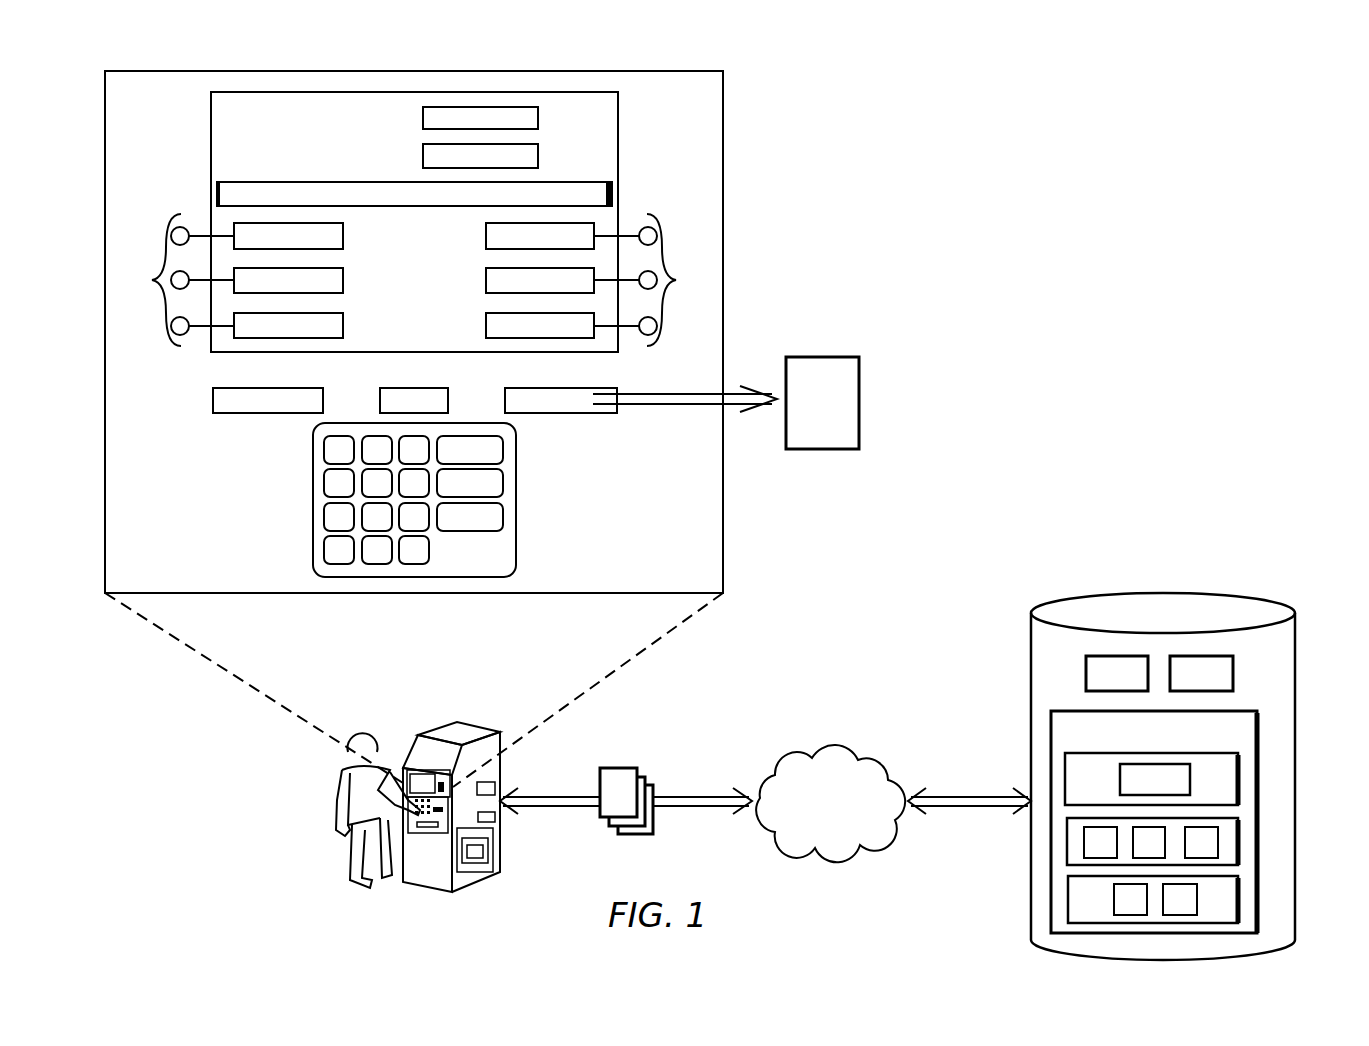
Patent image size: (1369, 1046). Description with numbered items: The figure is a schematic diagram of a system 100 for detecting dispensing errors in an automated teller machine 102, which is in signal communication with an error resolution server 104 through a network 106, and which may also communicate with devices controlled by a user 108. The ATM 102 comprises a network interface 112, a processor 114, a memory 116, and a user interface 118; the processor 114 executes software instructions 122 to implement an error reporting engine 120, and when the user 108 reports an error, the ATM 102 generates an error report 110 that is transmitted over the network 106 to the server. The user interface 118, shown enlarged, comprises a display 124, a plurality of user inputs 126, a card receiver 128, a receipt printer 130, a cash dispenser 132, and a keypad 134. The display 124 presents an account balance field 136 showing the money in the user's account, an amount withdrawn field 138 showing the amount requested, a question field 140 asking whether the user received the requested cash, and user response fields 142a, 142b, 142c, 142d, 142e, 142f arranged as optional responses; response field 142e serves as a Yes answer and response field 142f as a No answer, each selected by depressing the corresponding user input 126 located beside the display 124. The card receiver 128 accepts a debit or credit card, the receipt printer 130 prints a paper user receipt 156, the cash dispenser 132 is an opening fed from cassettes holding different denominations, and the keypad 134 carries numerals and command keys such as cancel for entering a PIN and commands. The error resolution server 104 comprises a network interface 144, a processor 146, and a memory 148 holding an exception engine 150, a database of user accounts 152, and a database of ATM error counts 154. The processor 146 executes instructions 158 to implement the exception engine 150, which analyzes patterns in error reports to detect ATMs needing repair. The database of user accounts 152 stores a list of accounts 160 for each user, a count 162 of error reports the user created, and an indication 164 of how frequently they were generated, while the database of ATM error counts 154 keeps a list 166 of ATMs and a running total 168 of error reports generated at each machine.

The system 100 is at (1256, 71).
The automated teller machine 102 is at (473, 728).
The error resolution server 104 is at (1163, 776).
The network 106 is at (830, 803).
The user 108 is at (313, 762).
The error report 110 is at (643, 772).
The network interface 112 is at (500, 777).
The processor 114 is at (498, 825).
The memory 116 is at (497, 840).
The user interface 118 is at (702, 71).
The error reporting engine 120 is at (488, 862).
The software instructions 122 is at (480, 860).
The display 124 is at (211, 133).
The user inputs 126 is at (418, 280).
The card receiver 128 is at (288, 387).
The receipt printer 130 is at (572, 387).
The cash dispenser 132 is at (427, 387).
The keypad 134 is at (516, 455).
The account balance field 136 is at (539, 115).
The amount withdrawn field 138 is at (539, 153).
The question field 140 is at (613, 192).
The user response field 142a is at (343, 222).
The user response field 142b is at (486, 248).
The user response field 142c is at (343, 267).
The user response field 142d is at (486, 292).
The user response field 142e is at (343, 312).
The user response field 142f is at (486, 337).
The network interface 144 is at (1117, 673).
The processor 146 is at (1201, 673).
The memory 148 is at (1154, 822).
The exception engine 150 is at (1240, 768).
The database of user accounts 152 is at (1240, 835).
The database of ATM error counts 154 is at (1240, 887).
The user receipt 156 is at (822, 403).
The instructions 158 is at (1155, 779).
The list of accounts 160 is at (1100, 842).
The count of error reports 162 is at (1149, 842).
The indication of error report frequency 164 is at (1201, 842).
The list of ATMs 166 is at (1130, 899).
The running total 168 is at (1180, 899).